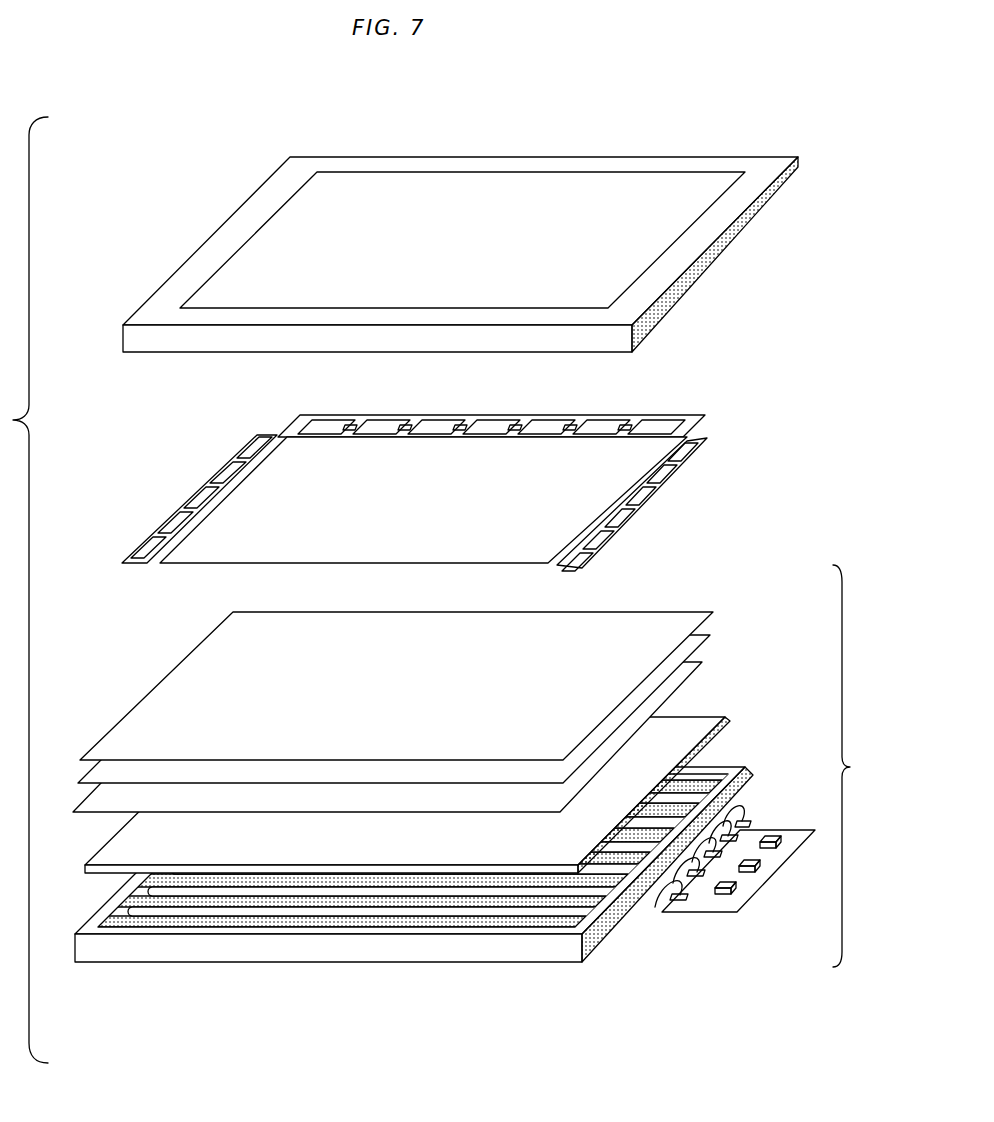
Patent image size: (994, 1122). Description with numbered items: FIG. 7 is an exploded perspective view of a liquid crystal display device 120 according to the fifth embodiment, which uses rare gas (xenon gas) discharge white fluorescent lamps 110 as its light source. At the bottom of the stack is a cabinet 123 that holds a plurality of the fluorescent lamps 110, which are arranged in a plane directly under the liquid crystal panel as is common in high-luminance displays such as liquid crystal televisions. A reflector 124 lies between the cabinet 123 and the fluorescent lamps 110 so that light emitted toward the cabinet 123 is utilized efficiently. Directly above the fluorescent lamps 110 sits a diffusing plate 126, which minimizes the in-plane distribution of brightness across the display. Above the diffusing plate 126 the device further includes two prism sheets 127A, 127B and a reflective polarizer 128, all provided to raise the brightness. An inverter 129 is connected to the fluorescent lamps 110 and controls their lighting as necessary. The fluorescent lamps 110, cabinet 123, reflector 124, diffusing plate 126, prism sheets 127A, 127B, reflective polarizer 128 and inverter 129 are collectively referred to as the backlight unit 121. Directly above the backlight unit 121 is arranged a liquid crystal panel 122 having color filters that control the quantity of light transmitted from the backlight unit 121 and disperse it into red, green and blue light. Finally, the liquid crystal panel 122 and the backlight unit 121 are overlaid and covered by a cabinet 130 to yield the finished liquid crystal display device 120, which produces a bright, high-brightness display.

The liquid crystal display device 120 is at (198, 98).
The backlight unit 121 is at (863, 766).
The cabinet 130 is at (657, 285).
The liquid crystal panel 122 is at (595, 485).
The reflective polarizer 128 is at (670, 616).
The prism sheet 127B is at (690, 636).
The prism sheet 127A is at (686, 668).
The diffusing plate 126 is at (700, 727).
The cabinet 123 is at (332, 950).
The reflector 124 is at (485, 923).
The rare gas discharge white fluorescent lamps 110 is at (255, 890).
The inverter 129 is at (695, 907).